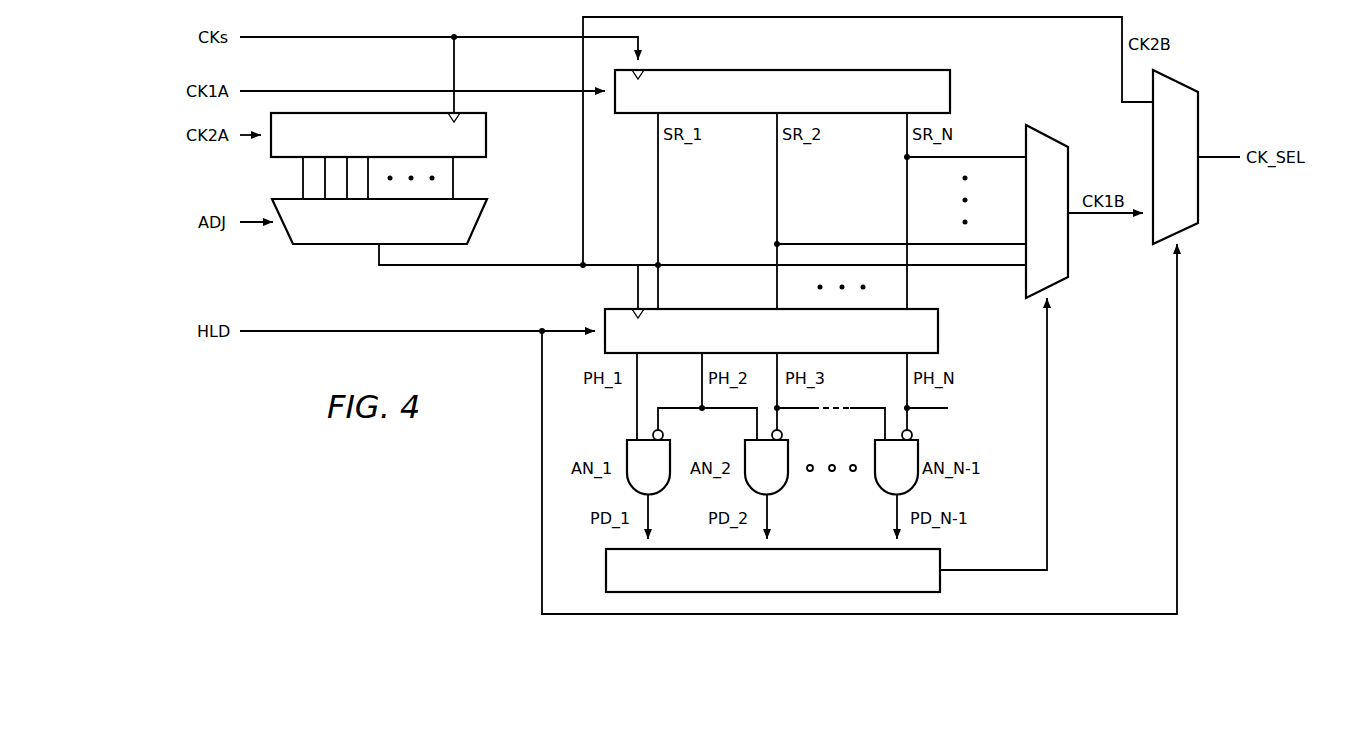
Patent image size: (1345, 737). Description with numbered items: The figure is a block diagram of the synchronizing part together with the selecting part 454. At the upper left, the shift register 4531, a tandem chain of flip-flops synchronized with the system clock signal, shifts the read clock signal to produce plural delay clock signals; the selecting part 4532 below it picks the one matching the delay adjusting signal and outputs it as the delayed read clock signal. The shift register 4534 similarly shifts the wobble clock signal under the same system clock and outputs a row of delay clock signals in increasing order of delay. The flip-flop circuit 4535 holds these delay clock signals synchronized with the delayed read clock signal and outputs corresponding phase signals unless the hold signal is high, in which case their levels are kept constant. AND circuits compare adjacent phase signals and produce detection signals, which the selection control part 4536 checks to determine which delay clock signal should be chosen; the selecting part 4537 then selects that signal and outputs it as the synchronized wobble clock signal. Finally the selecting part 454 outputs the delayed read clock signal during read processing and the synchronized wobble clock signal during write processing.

The shift register 4531 is at (486, 138).
The selecting part 4532 is at (335, 244).
The shift register 4534 is at (950, 85).
The flip-flop circuit 4535 is at (938, 335).
The selection control part 4536 is at (818, 549).
The selecting part 4537 is at (1068, 253).
The selecting part 454 is at (1198, 123).